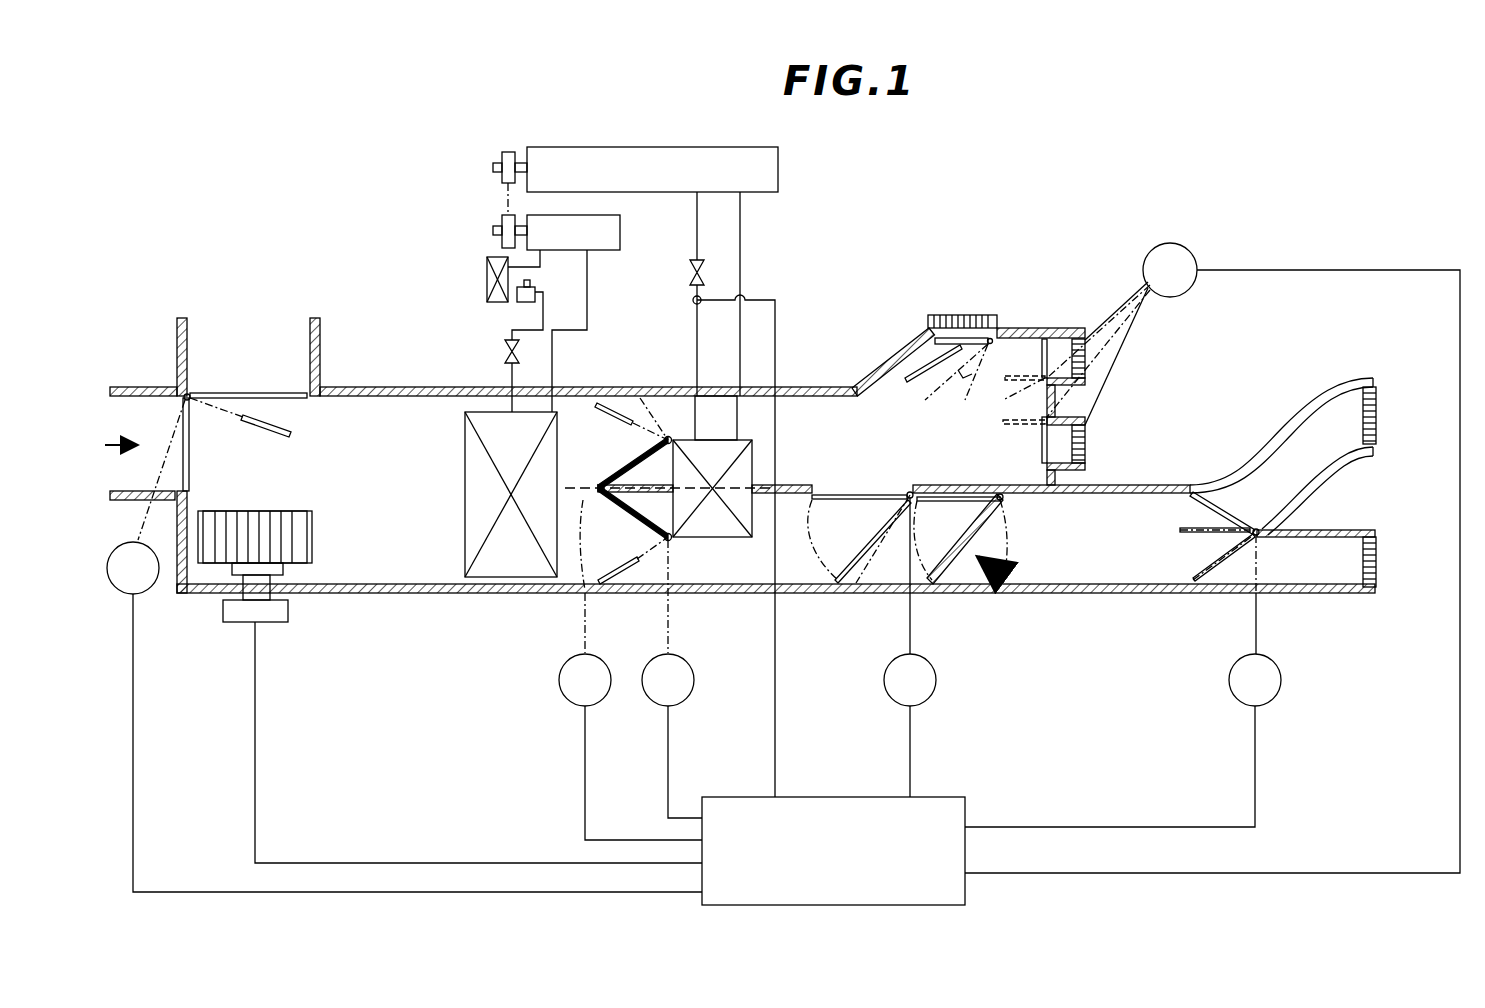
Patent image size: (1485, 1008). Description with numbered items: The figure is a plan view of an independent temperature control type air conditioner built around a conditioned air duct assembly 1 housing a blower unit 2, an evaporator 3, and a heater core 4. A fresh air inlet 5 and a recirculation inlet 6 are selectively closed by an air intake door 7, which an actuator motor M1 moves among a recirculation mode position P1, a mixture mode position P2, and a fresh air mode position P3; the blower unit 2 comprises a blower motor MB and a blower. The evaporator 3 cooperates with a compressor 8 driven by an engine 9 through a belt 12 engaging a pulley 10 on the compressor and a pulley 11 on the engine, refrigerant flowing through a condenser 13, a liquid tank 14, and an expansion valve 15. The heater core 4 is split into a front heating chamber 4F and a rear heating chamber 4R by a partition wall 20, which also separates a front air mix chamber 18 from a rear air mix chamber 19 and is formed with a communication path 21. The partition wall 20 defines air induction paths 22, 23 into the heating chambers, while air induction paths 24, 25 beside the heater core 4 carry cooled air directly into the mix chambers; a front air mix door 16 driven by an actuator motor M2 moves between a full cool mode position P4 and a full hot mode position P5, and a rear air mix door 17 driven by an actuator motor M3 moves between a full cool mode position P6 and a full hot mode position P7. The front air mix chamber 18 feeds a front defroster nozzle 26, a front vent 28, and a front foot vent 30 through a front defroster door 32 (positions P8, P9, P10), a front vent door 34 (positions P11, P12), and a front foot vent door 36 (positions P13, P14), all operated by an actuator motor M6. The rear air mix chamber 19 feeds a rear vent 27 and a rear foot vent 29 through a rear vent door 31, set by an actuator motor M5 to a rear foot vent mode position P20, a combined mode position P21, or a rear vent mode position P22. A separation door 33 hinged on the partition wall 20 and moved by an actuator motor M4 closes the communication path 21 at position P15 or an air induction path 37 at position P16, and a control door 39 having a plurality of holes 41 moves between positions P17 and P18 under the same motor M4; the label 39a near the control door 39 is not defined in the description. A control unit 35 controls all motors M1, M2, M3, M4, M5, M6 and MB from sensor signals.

The conditioned air duct assembly 1 is at (836, 365).
The blower unit 2 is at (212, 570).
The evaporator 3 is at (463, 520).
The heater core 4 is at (720, 548).
The front heating chamber 4F is at (770, 430).
The rear heating chamber 4R is at (700, 530).
The fresh air inlet 5 is at (280, 330).
The recirculation inlet 6 is at (125, 455).
The air intake door 7 is at (285, 390).
The compressor 8 is at (622, 233).
The engine 9 is at (670, 160).
The pulley 10 is at (495, 240).
The pulley 11 is at (508, 150).
The belt 12 is at (500, 200).
The condenser 13 is at (485, 282).
The liquid tank 14 is at (520, 300).
The expansion valve 15 is at (504, 352).
The front air mix door 16 is at (635, 462).
The rear air mix door 17 is at (633, 515).
The front air mix chamber 18 is at (810, 430).
The rear air mix chamber 19 is at (772, 540).
The partition wall 20 is at (793, 495).
The communication path 21 is at (855, 480).
The air induction path 22 is at (745, 455).
The air induction path 23 is at (750, 485).
The air induction path 24 is at (716, 418).
The air induction path 25 is at (736, 560).
The front defroster nozzle 26 is at (955, 315).
The rear vent 27 is at (1378, 410).
The front vent 28 is at (1095, 358).
The rear foot vent 29 is at (1378, 563).
The front foot vent 30 is at (1090, 445).
The rear vent door 31 is at (1237, 520).
The front defroster door 32 is at (970, 338).
The separation door 33 is at (873, 495).
The front vent door 34 is at (1010, 332).
The control unit 35 is at (945, 797).
The front foot vent door 36 is at (1080, 412).
The air induction path 37 is at (895, 570).
The control door 39 is at (990, 582).
The foot door pivot 39a is at (1003, 497).
The holes 41 is at (1005, 522).
The recirculation mode position P1 is at (300, 398).
The fresh/recirculation mixture mode position P2 is at (291, 436).
The fresh air mode position P3 is at (190, 470).
The full cool mode position P4 is at (605, 404).
The full hot mode position P5 is at (643, 397).
The full cool mode position P6 is at (598, 505).
The full hot mode position P7 is at (632, 580).
The fully closed position P8 is at (915, 372).
The partially open position P9 is at (945, 384).
The fully open position P10 is at (970, 381).
The fully closed position P11 is at (1042, 350).
The fully open position P12 is at (1019, 397).
The fully closed position P13 is at (1040, 452).
The fully open position P14 is at (1025, 425).
The separation door position P15 is at (828, 500).
The separation door position P16 is at (850, 590).
The control door position P17 is at (960, 613).
The control door position P18 is at (950, 501).
The rear foot vent mode position P20 is at (1193, 500).
The rear vent and rear foot vent mode position P21 is at (1180, 532).
The rear vent mode position P22 is at (1195, 575).
The actuator motor M1 is at (404, 717).
The actuator motor M2 is at (630, 747).
The actuator motor M3 is at (672, 679).
The actuator motor M4 is at (910, 725).
The actuator motor M5 is at (1123, 681).
The actuator motor M6 is at (1212, 558).
The blower motor MB is at (280, 625).